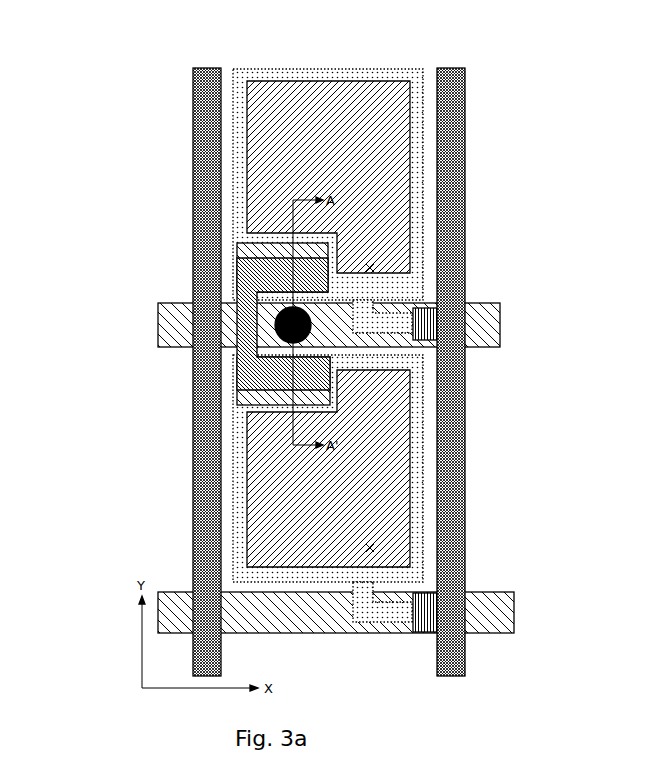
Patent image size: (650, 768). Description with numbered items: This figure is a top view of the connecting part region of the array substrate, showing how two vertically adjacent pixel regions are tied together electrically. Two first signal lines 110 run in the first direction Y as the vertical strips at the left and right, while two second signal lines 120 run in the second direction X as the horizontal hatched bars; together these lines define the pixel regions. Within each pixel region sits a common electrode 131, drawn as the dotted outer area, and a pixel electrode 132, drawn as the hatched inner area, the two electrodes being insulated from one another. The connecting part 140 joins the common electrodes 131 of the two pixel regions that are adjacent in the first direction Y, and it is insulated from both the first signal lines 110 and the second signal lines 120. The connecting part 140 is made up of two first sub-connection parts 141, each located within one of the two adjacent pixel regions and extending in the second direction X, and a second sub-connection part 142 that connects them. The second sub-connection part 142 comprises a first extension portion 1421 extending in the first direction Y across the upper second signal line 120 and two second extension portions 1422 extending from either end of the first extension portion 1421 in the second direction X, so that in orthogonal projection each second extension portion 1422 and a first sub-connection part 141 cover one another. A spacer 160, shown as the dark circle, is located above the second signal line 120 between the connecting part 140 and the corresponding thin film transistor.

The first signal line 110 is at (452, 87).
The second signal line 120 is at (496, 305).
The common electrode 131 is at (312, 75).
The pixel electrode 132 is at (368, 88).
The connecting part 140 is at (188, 336).
The first sub-connection part 141 is at (303, 252).
The second sub-connection part 142 is at (211, 344).
The first extension portion 1421 is at (243, 337).
The second extension portion 1422 is at (273, 407).
The spacer 160 is at (306, 337).